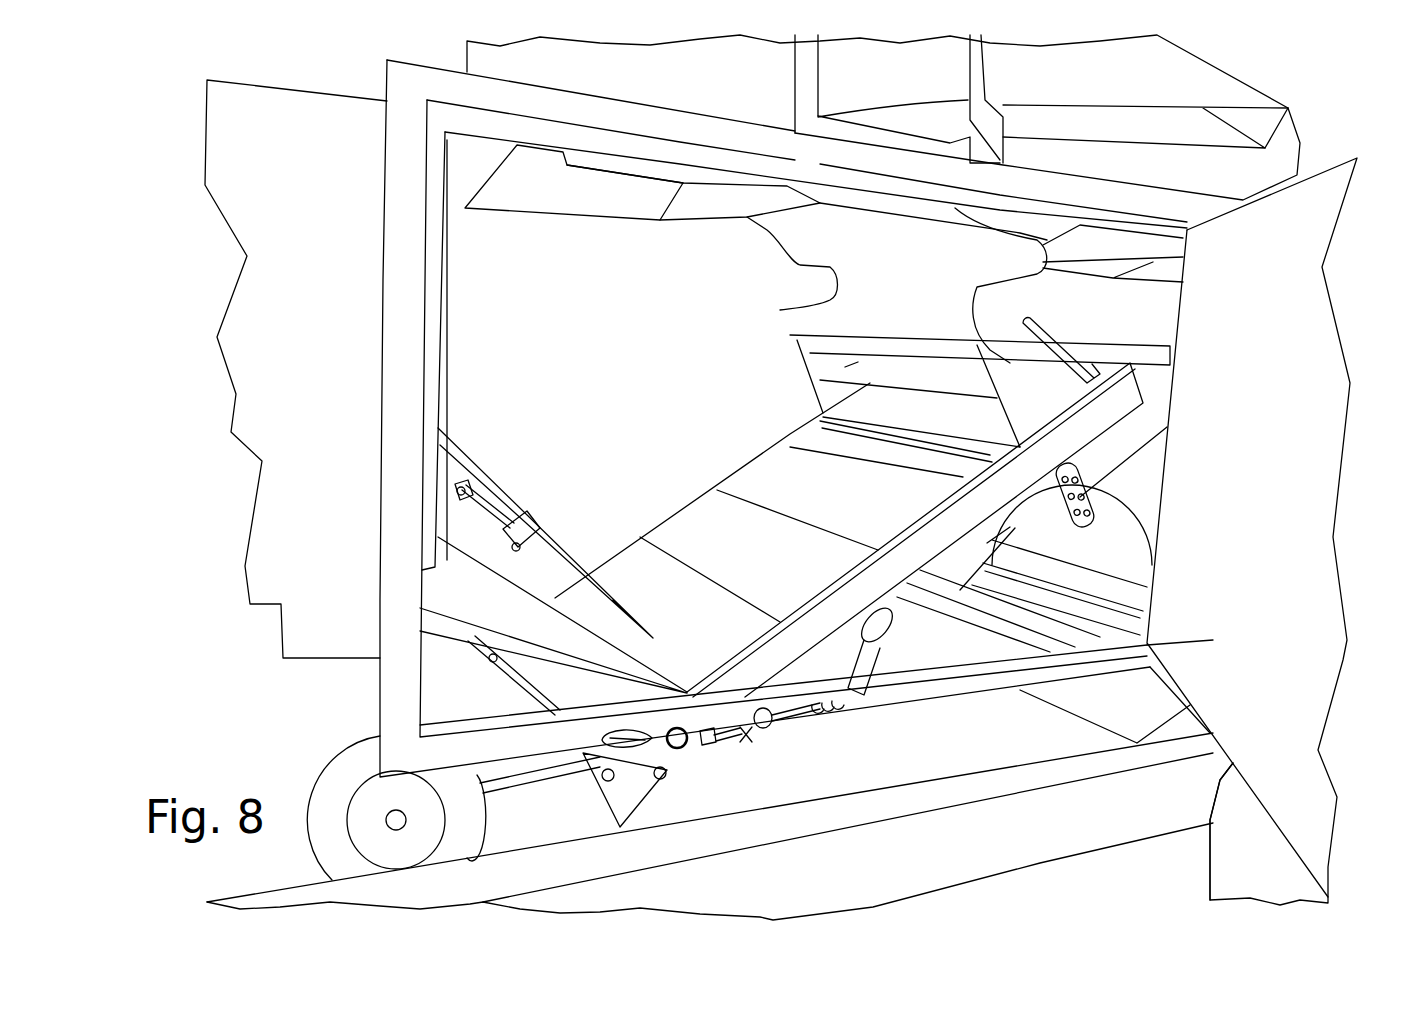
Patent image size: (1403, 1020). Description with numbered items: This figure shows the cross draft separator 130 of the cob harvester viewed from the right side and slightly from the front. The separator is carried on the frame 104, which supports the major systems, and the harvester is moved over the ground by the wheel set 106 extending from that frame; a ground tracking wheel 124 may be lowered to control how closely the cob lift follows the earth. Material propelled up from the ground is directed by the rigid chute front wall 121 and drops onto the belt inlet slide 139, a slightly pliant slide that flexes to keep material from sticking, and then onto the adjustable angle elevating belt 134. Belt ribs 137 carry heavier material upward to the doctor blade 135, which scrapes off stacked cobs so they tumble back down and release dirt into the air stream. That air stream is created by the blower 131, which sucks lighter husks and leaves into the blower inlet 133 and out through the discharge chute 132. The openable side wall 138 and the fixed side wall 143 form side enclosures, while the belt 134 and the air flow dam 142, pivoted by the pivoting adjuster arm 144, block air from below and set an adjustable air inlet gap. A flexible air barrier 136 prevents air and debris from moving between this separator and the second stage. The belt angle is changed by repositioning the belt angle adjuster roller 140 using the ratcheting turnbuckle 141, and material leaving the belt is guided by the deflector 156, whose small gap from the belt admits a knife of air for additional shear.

The frame 104 is at (1009, 885).
The wheel set 106 is at (1225, 883).
The rigid chute front wall 121 is at (252, 98).
The ground tracking wheel 124 is at (357, 780).
The cross draft separator 130 is at (380, 40).
The blower 131 is at (480, 63).
The discharge chute 132 is at (1144, 83).
The blower inlet 133 is at (577, 208).
The adjustable angle elevating belt 134 is at (702, 512).
The doctor blade 135 is at (905, 493).
The flexible air barrier 136 is at (820, 270).
The belt ribs 137 is at (850, 372).
The openable side wall 138 is at (1302, 480).
The belt inlet slide 139 is at (470, 463).
The belt angle adjuster roller 140 is at (883, 650).
The ratcheting turnbuckle 141 is at (728, 732).
The air flow dam 142 is at (542, 585).
The fixed side wall 143 is at (647, 362).
The pivoting adjuster arm 144 is at (567, 780).
The deflector 156 is at (1127, 543).